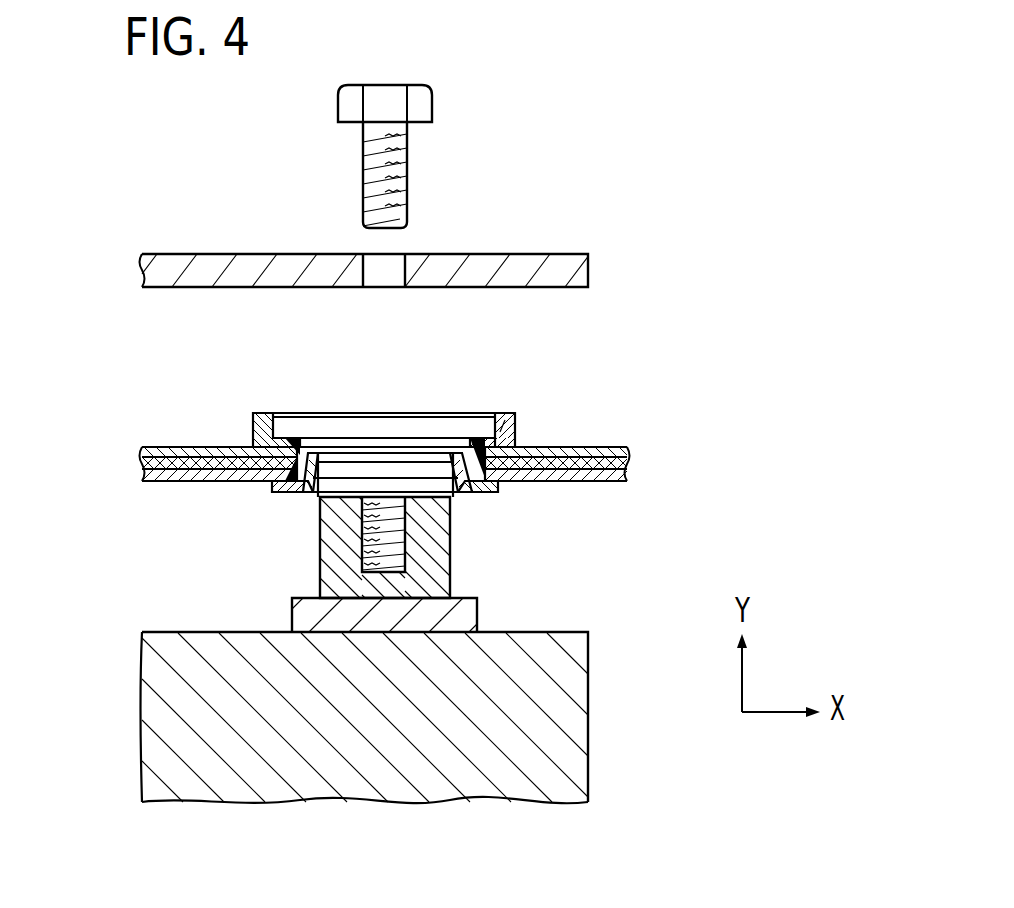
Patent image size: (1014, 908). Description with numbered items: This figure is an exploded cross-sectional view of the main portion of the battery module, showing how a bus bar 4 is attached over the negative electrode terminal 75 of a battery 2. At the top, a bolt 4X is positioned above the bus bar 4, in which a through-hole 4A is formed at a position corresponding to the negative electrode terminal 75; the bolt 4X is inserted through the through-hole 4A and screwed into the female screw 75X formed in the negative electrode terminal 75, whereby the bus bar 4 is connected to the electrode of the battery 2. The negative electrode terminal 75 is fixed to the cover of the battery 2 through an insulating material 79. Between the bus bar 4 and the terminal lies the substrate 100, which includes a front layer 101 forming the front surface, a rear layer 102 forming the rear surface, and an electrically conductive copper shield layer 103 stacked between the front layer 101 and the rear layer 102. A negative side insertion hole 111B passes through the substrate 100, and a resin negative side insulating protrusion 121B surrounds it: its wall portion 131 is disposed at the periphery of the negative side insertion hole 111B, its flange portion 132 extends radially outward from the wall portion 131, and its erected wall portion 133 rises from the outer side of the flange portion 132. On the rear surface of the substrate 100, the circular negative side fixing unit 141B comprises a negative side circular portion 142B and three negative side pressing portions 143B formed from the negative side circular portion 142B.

The battery 2 is at (592, 720).
The bus bar 4 is at (546, 254).
The through-hole 4A is at (396, 272).
The bolt 4X is at (386, 94).
The negative electrode terminal 75 is at (433, 689).
The female screw 75X is at (397, 562).
The insulating material 79 is at (470, 612).
The substrate 100 is at (446, 449).
The front layer 101 is at (175, 446).
The rear layer 102 is at (173, 482).
The shield layer 103 is at (150, 463).
The negative side insertion hole 111B is at (287, 474).
The negative side insulating protrusion 121B is at (258, 411).
The wall portion 131 is at (470, 457).
The flange portion 132 is at (474, 436).
The erected wall portion 133 is at (505, 420).
The negative side fixing unit 141B is at (303, 497).
The negative side circular portion 142B is at (483, 493).
The negative side pressing portion 143B is at (446, 468).